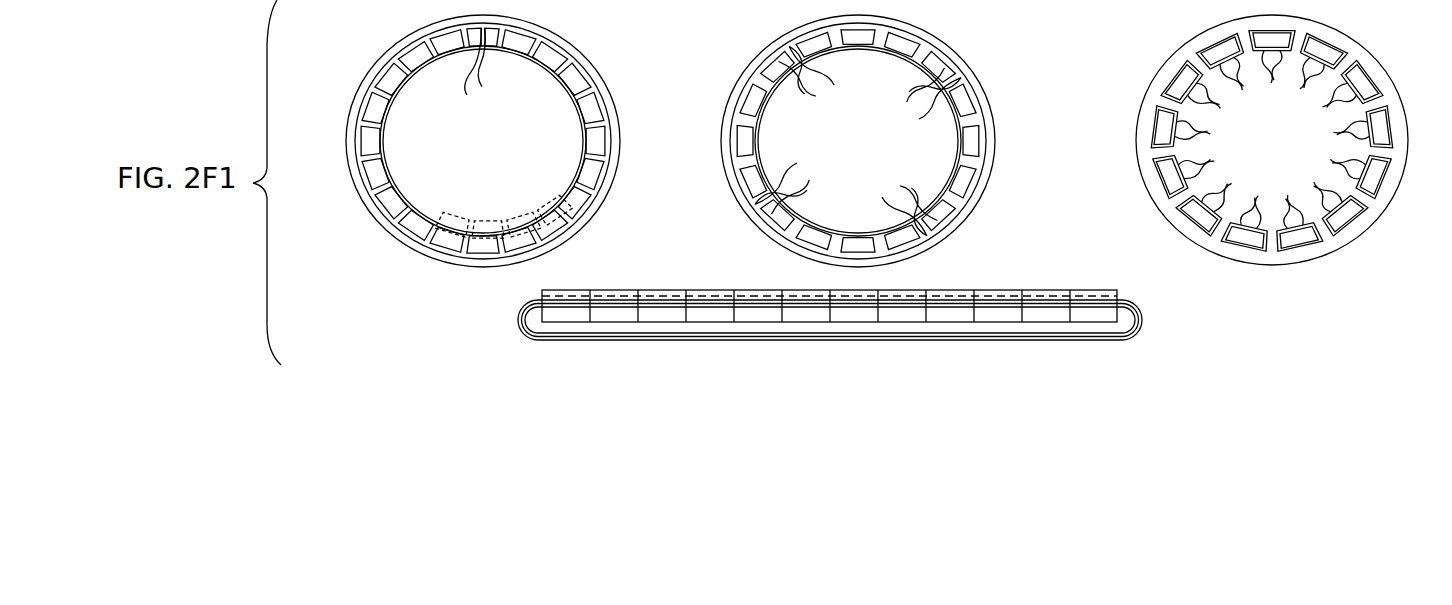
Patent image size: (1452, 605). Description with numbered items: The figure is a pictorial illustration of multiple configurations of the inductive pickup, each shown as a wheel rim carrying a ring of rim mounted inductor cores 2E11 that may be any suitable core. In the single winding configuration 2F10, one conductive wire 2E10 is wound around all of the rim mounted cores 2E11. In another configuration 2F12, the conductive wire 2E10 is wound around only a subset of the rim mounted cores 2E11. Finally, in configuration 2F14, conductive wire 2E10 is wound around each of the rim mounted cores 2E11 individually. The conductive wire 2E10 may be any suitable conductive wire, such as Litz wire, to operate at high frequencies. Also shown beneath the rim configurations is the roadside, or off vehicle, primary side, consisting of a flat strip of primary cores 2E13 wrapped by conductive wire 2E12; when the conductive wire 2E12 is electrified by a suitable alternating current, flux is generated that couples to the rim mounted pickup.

The single winding configuration 2F10 is at (375, 24).
The configuration 2F12 is at (730, 32).
The configuration 2F14 is at (1143, 32).
The conductive wire 2E10 is at (382, 68).
The rim mounted inductor core 2E11 is at (368, 176).
The conductive wire 2E12 is at (803, 340).
The roadside primary core 2E13 is at (990, 290).